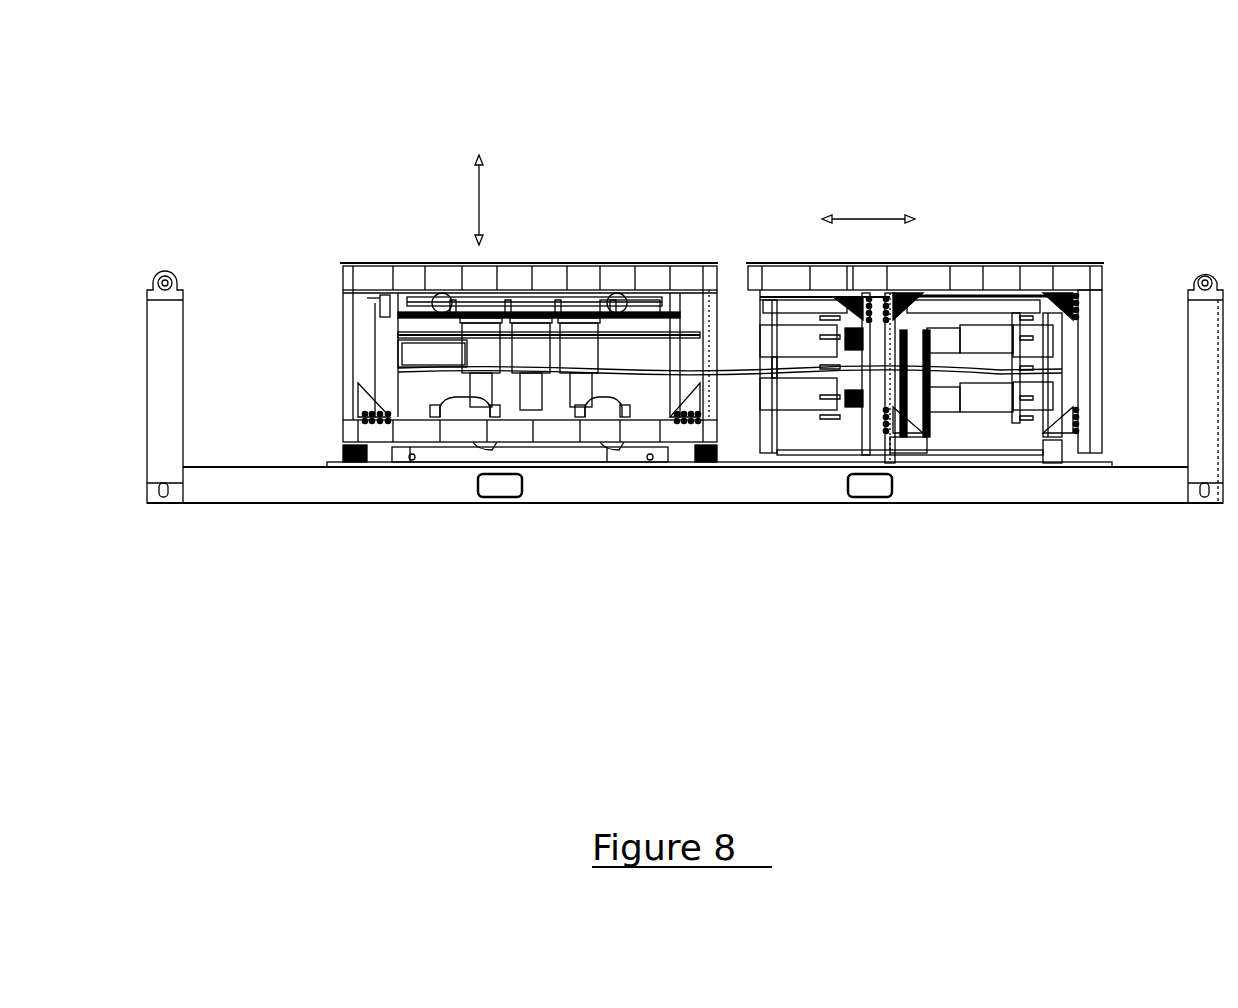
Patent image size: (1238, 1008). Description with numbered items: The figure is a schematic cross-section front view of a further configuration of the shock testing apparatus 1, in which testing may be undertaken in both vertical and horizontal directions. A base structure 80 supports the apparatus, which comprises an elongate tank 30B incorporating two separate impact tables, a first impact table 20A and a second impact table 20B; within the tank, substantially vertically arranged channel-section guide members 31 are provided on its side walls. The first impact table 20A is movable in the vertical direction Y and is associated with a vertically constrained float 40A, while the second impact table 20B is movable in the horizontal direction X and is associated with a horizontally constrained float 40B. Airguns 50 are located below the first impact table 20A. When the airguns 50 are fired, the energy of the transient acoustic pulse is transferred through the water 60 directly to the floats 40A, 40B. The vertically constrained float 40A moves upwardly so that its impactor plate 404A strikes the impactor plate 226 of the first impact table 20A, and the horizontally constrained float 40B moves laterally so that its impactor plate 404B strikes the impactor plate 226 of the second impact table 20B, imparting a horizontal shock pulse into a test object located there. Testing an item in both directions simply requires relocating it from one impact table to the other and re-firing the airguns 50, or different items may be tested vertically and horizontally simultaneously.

The shock testing apparatus 1 is at (685, 350).
The first impact table 20A is at (529, 294).
The second impact table 20B is at (931, 316).
The elongate tank 30B is at (743, 333).
The impactor plate 226 is at (410, 307).
The impactor plate 404A is at (417, 330).
The vertically constrained float 40A is at (410, 358).
The base structure 80 is at (685, 461).
The channel-section guide members 31 is at (388, 455).
The airguns 50 is at (462, 413).
The water 60 is at (743, 378).
The horizontally constrained float 40B is at (830, 440).
The impactor plate 404B is at (907, 443).